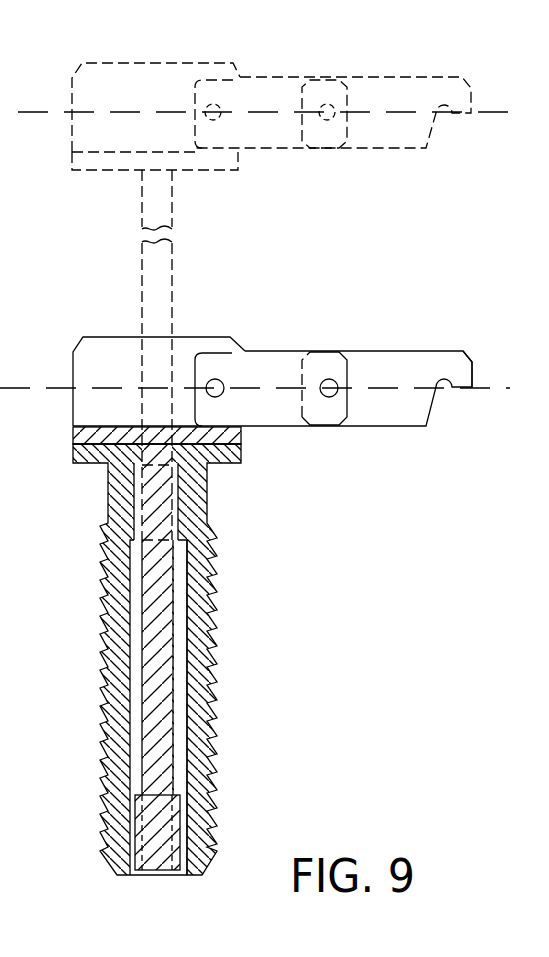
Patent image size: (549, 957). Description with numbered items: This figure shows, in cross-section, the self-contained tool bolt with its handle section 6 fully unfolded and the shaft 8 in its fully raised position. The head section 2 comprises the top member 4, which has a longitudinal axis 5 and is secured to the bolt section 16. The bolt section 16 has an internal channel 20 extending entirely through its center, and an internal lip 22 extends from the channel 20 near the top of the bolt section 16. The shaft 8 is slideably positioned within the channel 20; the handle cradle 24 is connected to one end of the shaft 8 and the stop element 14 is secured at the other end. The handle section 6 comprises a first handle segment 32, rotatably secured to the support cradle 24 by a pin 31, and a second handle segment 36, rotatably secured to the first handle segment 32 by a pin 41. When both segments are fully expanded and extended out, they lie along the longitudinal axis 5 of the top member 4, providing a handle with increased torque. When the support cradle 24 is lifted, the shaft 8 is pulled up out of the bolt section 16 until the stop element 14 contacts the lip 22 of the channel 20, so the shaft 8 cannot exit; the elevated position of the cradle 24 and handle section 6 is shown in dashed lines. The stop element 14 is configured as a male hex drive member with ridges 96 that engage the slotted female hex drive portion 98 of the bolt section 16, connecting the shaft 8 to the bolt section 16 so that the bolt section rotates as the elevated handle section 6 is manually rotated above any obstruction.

The head section 2 is at (4, 162).
The top member 4 is at (88, 350).
The longitudinal axis 5 is at (497, 117).
The handle section 6 is at (470, 93).
The shaft 8 is at (173, 207).
The stop element 14 is at (132, 549).
The bolt section 16 is at (208, 498).
The internal channel 20 is at (178, 673).
The internal lip 22 is at (180, 550).
The handle cradle 24 is at (118, 92).
The pin 31 is at (216, 379).
The first handle segment 32 is at (376, 92).
The second handle segment 36 is at (248, 102).
The pin 41 is at (329, 379).
The ridges 96 is at (147, 830).
The slotted female hex drive portion 98 is at (137, 498).